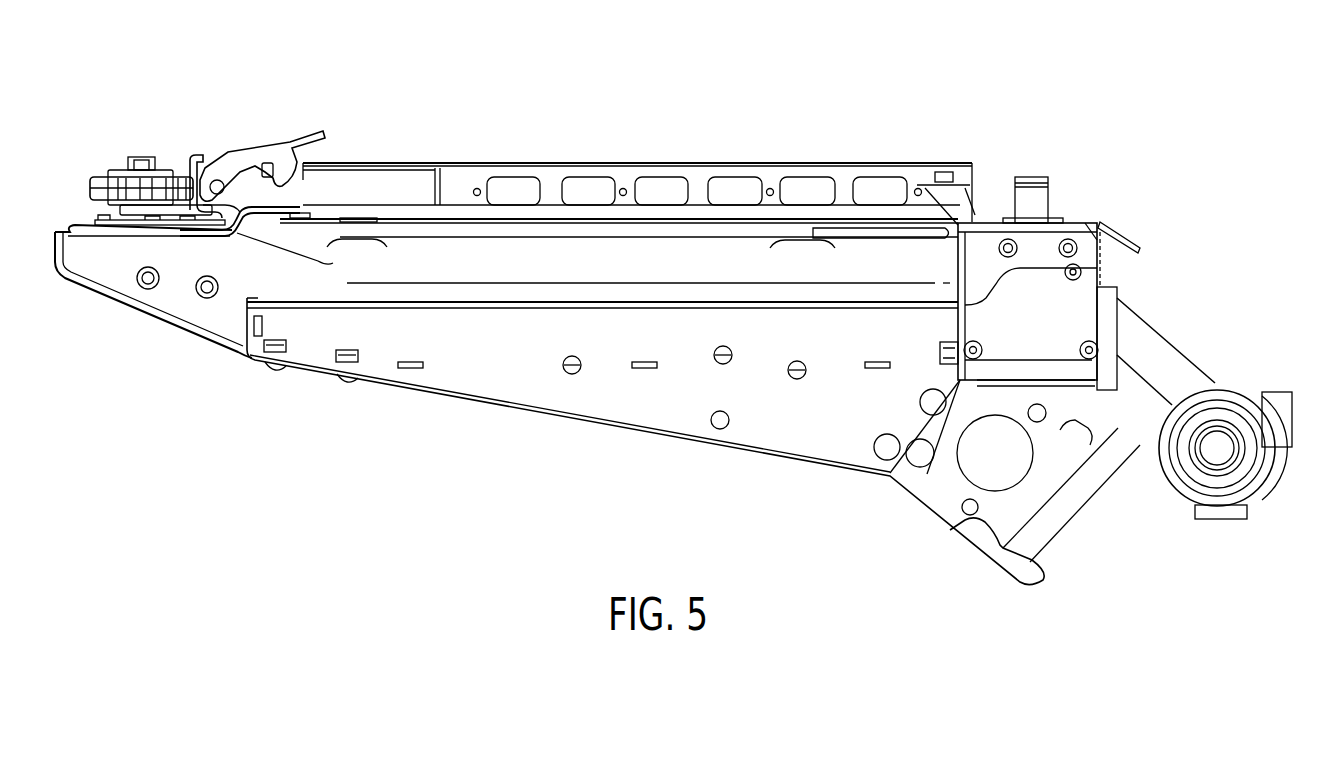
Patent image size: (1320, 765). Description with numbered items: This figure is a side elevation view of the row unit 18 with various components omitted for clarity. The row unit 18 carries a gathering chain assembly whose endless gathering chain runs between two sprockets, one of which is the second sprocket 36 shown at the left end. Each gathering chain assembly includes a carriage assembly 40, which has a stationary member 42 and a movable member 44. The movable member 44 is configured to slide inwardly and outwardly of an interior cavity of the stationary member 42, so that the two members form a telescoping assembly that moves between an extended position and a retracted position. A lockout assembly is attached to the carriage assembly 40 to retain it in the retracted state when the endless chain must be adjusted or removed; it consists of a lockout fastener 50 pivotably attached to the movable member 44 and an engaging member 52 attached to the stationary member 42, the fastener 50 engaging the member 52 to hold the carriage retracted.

The row unit 18 is at (1064, 78).
The second sprocket 36 is at (93, 186).
The carriage assembly 40 is at (438, 146).
The stationary member 42 is at (354, 178).
The movable member 44 is at (215, 168).
The lockout fastener 50 is at (258, 165).
The engaging member 52 is at (270, 180).